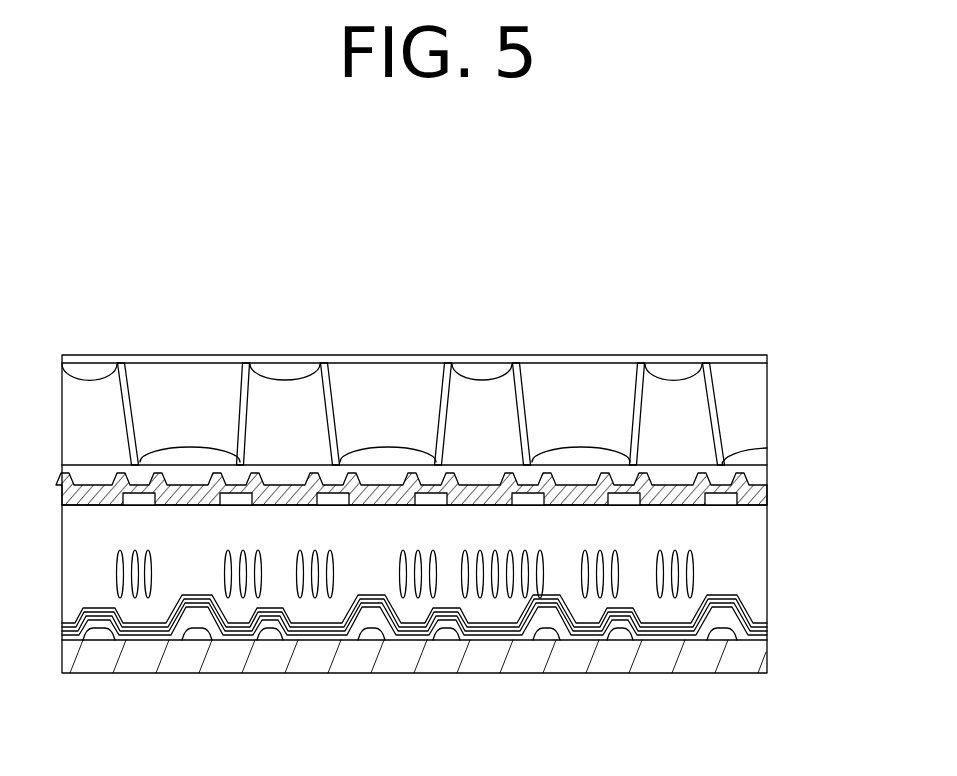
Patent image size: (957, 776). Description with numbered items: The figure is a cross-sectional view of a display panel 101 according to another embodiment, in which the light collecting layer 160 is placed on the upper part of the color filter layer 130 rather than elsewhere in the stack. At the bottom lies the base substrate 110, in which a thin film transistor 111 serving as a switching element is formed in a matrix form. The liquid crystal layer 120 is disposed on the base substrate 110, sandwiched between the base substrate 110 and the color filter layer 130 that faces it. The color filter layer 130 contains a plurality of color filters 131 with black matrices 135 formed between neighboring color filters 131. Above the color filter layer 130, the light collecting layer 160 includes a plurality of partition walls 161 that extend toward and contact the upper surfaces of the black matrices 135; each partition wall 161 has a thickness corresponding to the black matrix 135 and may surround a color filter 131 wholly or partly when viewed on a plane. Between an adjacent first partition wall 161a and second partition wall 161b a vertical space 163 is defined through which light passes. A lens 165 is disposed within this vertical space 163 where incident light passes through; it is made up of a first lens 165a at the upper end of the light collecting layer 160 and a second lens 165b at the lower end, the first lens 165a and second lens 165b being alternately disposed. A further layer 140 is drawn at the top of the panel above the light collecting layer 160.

The display panel 101 is at (447, 191).
The base substrate 110 is at (757, 647).
The thin film transistor 111 is at (747, 620).
The liquid crystal layer 120 is at (774, 567).
The color filter layer 130 is at (460, 603).
The color filter 131 is at (695, 505).
The black matrix 135 is at (630, 505).
The encapsulation layer 140 is at (757, 355).
The light collecting layer 160 is at (463, 348).
The partition wall 161 is at (396, 348).
The first partition wall 161a is at (127, 408).
The second partition wall 161b is at (243, 405).
The vertical space 163 is at (487, 420).
The lens 165 is at (453, 348).
The first lens 165a is at (288, 368).
The second lens 165b is at (386, 456).